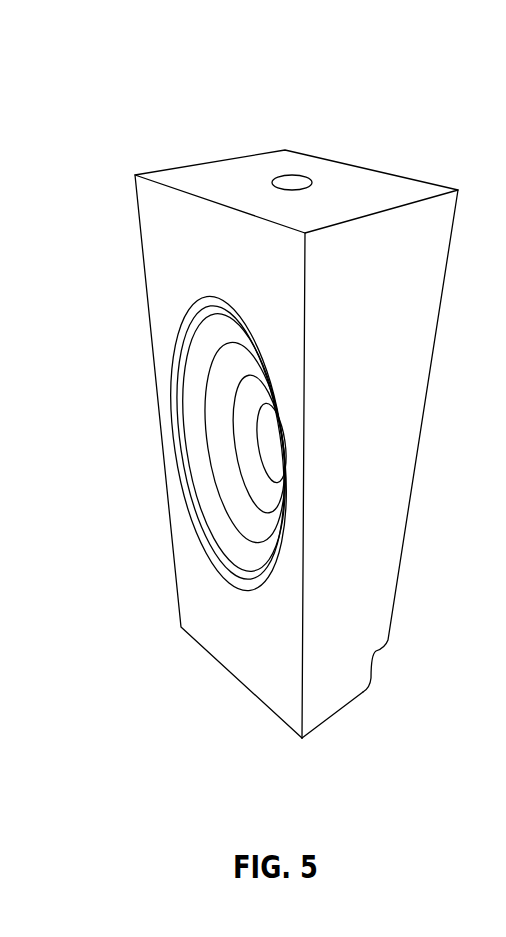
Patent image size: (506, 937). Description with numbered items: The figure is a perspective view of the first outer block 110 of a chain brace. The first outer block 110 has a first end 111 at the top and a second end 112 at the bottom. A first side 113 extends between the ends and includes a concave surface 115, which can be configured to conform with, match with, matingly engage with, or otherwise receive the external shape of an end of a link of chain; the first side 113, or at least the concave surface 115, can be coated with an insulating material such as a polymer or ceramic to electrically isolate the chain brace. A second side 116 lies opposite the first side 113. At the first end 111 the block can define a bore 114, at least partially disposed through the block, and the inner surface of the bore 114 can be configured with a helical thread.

The first outer block 110 is at (207, 98).
The first end 111 is at (395, 187).
The second end 112 is at (323, 725).
The first side 113 is at (187, 588).
The bore 114 is at (292, 178).
The concave surface 115 is at (198, 476).
The second side 116 is at (423, 423).